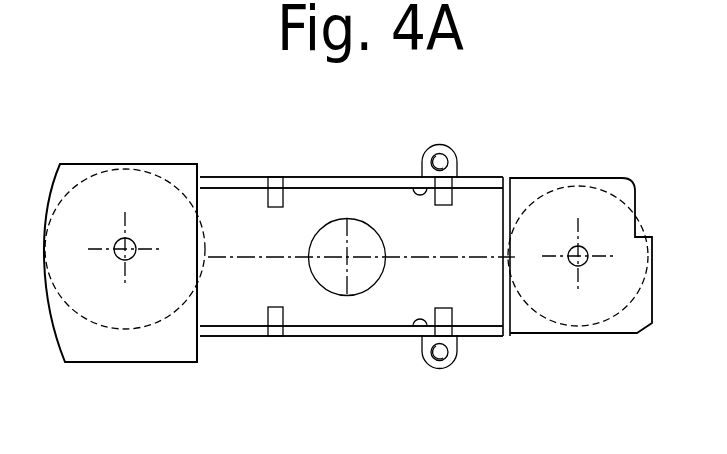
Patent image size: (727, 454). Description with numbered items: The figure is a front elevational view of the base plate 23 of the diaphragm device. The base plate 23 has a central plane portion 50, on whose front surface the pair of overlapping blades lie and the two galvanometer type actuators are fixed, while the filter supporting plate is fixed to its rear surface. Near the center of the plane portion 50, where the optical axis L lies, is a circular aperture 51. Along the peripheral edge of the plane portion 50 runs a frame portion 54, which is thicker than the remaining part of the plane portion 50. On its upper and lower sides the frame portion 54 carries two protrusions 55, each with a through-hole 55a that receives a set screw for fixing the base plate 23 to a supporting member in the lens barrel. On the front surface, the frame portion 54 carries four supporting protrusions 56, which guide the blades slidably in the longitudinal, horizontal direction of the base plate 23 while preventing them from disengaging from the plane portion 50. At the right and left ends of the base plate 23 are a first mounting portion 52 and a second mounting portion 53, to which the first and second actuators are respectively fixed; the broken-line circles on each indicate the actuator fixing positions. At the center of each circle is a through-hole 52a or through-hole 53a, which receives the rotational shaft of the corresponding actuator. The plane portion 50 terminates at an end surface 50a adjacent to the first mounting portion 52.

The base plate 23 is at (294, 167).
The plane portion 50 is at (233, 303).
The end surface 50a is at (512, 195).
The circular aperture 51 is at (367, 230).
The first mounting portion 52 is at (527, 322).
The through-hole 52a is at (580, 264).
The second mounting portion 53 is at (128, 346).
The through-hole 53a is at (120, 258).
The frame portion 54 is at (378, 177).
The protrusion 55 is at (458, 163).
The through-hole 55a is at (439, 153).
The supporting protrusion 56 is at (276, 208).
The optical axis L is at (344, 260).